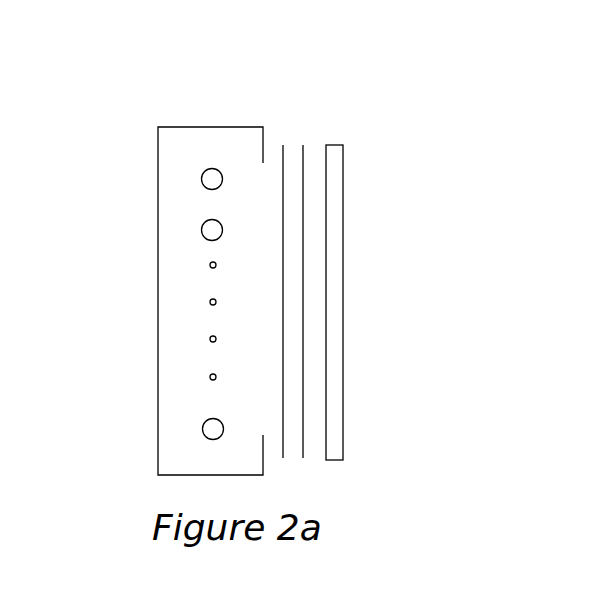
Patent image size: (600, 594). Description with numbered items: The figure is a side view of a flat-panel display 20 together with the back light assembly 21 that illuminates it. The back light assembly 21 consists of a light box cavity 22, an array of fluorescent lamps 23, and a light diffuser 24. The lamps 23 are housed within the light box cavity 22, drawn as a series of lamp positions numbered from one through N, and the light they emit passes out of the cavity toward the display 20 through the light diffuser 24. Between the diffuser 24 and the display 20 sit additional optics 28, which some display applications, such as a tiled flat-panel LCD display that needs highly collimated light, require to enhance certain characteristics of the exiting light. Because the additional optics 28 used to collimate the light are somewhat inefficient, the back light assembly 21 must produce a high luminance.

The flat-panel display 20 is at (343, 163).
The back light assembly 21 is at (244, 246).
The light box cavity 22 is at (160, 372).
The array of fluorescent lamps 23 is at (201, 179).
The light diffuser 24 is at (283, 245).
The additional optics 28 is at (303, 449).